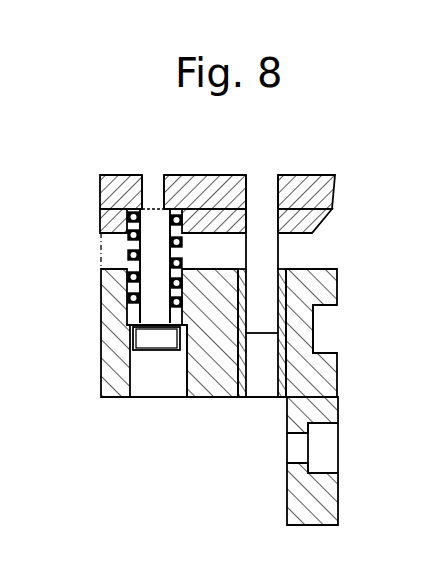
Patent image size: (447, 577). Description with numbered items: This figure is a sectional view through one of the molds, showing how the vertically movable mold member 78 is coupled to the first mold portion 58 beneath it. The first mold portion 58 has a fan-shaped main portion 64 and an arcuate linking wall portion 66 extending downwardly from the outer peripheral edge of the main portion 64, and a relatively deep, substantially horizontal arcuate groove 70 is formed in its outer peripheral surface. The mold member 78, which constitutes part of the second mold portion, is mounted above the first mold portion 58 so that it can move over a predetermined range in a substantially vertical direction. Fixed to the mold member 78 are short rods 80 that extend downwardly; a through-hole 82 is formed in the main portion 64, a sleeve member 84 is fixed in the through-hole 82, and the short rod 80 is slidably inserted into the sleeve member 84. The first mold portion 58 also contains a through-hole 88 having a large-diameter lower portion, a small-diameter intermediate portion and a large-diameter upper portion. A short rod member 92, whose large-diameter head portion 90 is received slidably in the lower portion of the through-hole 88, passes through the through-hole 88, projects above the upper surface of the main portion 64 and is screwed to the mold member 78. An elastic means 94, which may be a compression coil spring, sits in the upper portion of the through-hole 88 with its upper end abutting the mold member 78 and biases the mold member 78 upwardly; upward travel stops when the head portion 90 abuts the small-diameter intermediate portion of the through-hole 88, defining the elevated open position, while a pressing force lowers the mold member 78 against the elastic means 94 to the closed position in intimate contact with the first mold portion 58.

The first mold portion 58 is at (345, 290).
The main portion 64 is at (108, 311).
The linking wall portion 66 is at (290, 494).
The groove 70 is at (327, 350).
The mold member 78 is at (303, 172).
The short rod 80 is at (270, 250).
The through-hole 82 is at (246, 371).
The sleeve member 84 is at (276, 387).
The through-hole 88 is at (143, 391).
The large-diameter head portion 90 is at (140, 341).
The short rod member 92 is at (152, 258).
The elastic means 94 is at (180, 248).